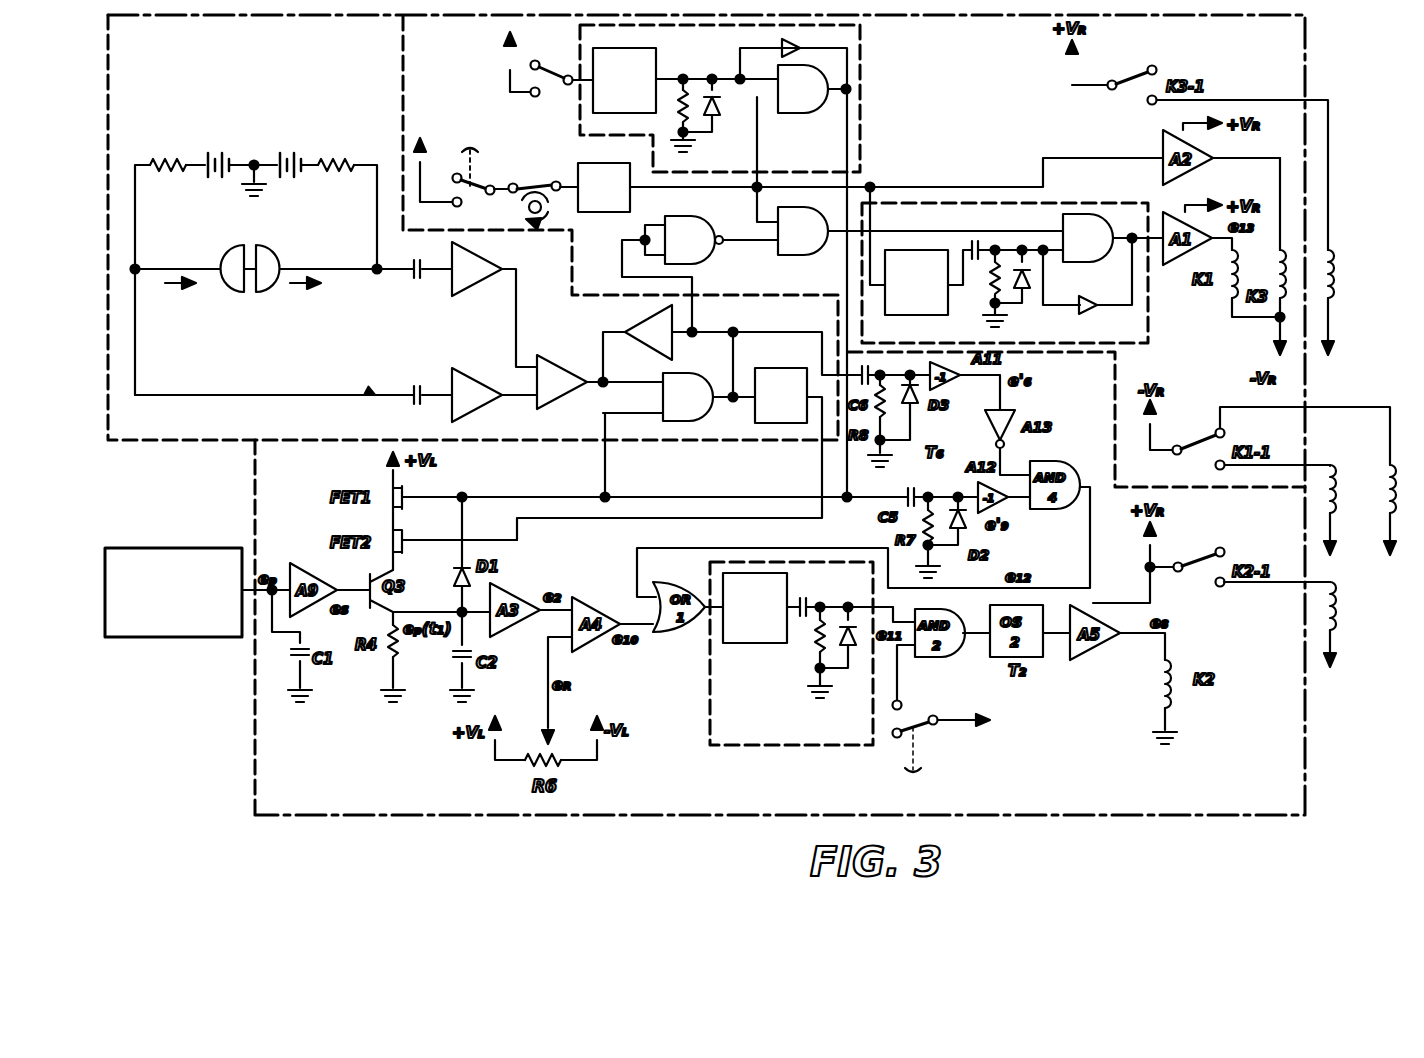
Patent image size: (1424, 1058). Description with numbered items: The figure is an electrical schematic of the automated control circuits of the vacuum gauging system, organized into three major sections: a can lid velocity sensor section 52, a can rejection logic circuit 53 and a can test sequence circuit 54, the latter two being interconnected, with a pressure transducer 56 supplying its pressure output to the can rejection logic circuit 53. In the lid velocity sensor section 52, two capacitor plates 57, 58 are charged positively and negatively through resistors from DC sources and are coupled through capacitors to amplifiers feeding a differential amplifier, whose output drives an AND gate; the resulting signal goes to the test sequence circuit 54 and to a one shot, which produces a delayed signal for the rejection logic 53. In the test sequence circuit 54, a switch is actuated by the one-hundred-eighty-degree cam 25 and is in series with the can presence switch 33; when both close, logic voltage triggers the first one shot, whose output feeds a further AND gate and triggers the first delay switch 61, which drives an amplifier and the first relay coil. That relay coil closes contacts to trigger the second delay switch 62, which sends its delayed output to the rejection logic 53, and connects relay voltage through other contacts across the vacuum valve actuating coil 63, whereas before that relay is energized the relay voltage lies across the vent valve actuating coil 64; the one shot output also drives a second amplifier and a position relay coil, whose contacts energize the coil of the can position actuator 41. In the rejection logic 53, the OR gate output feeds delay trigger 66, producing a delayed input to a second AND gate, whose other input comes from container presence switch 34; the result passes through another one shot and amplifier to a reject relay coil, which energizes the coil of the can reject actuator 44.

The cam 25 is at (515, 216).
The can presence switch 33 is at (478, 182).
The container presence switch 34 is at (925, 742).
The can position actuator 41 is at (1336, 266).
The can reject actuator 44 is at (1337, 610).
The can lid velocity sensor section 52 is at (170, 445).
The can rejection logic circuit 53 is at (250, 686).
The can test sequence circuit 54 is at (1312, 56).
The pressure transducer 56 is at (170, 522).
The capacitor plate 57 is at (230, 290).
The capacitor plate 58 is at (263, 292).
The delay switch 61 is at (1152, 334).
The delay switch 62 is at (868, 56).
The vacuum valve actuating coil 63 is at (1352, 462).
The vent valve actuating coil 64 is at (1393, 478).
The delay trigger 66 is at (736, 752).